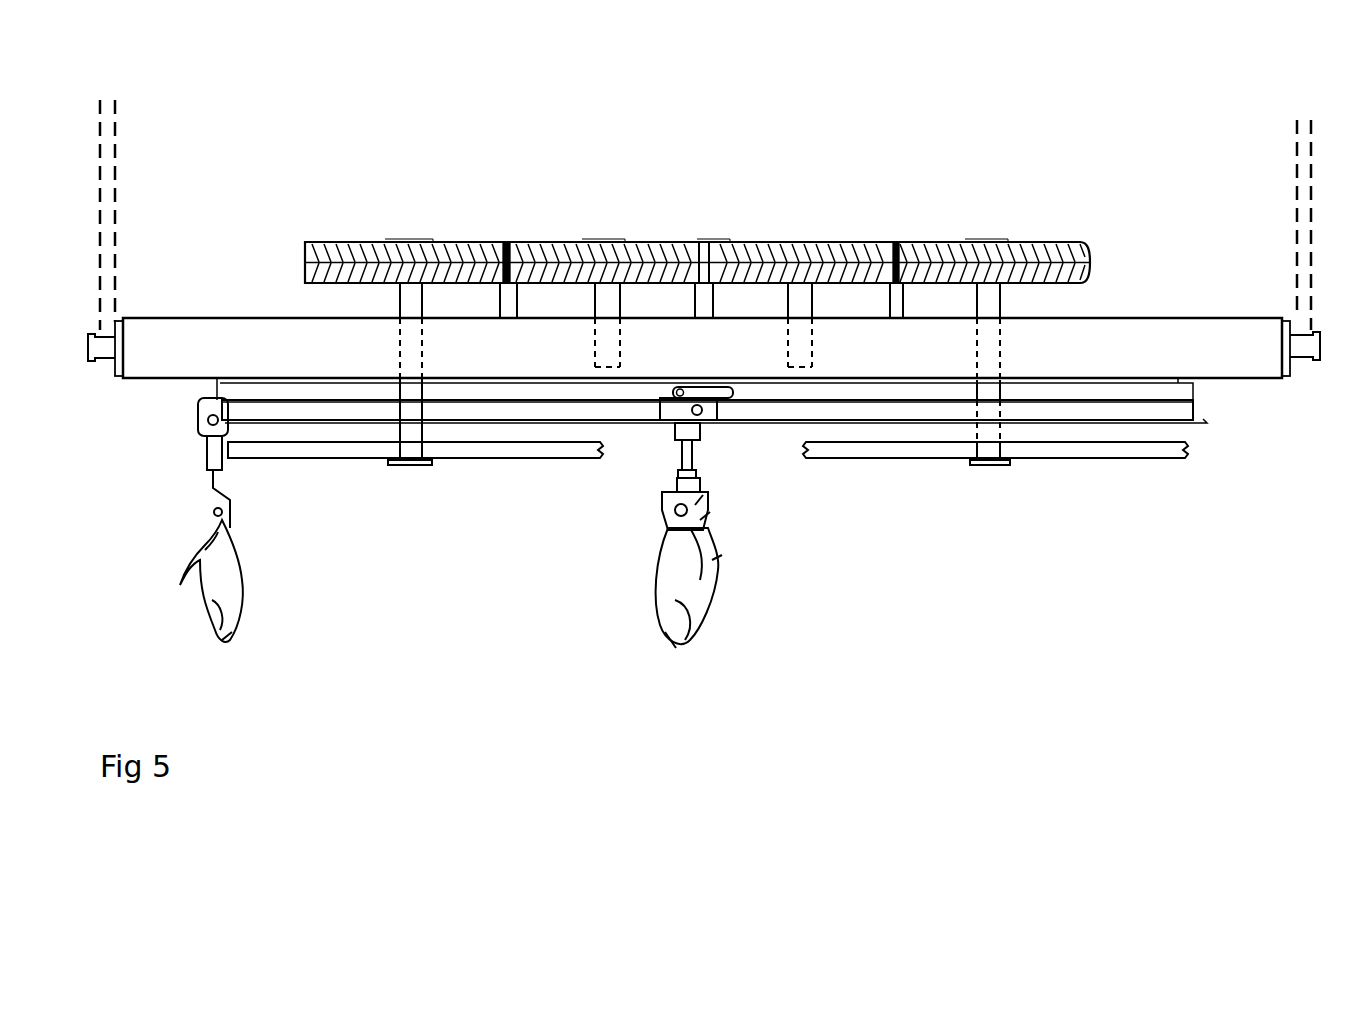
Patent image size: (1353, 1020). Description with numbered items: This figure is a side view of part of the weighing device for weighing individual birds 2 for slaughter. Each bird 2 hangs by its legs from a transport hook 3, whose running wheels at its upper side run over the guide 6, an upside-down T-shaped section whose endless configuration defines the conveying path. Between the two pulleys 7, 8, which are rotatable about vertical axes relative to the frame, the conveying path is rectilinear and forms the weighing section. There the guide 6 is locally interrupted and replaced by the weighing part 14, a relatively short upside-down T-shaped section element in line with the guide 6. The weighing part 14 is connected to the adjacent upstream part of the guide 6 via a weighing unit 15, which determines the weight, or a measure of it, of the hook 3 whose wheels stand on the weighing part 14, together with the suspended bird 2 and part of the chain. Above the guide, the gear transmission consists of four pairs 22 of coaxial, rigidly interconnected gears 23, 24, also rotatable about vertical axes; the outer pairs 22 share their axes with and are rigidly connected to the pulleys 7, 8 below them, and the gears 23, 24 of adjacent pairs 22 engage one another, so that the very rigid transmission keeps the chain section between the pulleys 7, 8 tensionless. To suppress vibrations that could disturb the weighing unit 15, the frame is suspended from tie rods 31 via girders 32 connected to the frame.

The bird for slaughter 2 is at (703, 582).
The transport hook 3 is at (660, 498).
The guide 6 is at (330, 410).
The pulley 7 is at (1105, 450).
The pulley 8 is at (497, 460).
The weighing part 14 is at (672, 422).
The weighing unit 15 is at (727, 400).
The pair of coaxial gears 22 is at (585, 212).
The gear 23 is at (353, 240).
The gear 24 is at (307, 287).
The tie rod 31 is at (96, 234).
The girder 32 is at (103, 362).